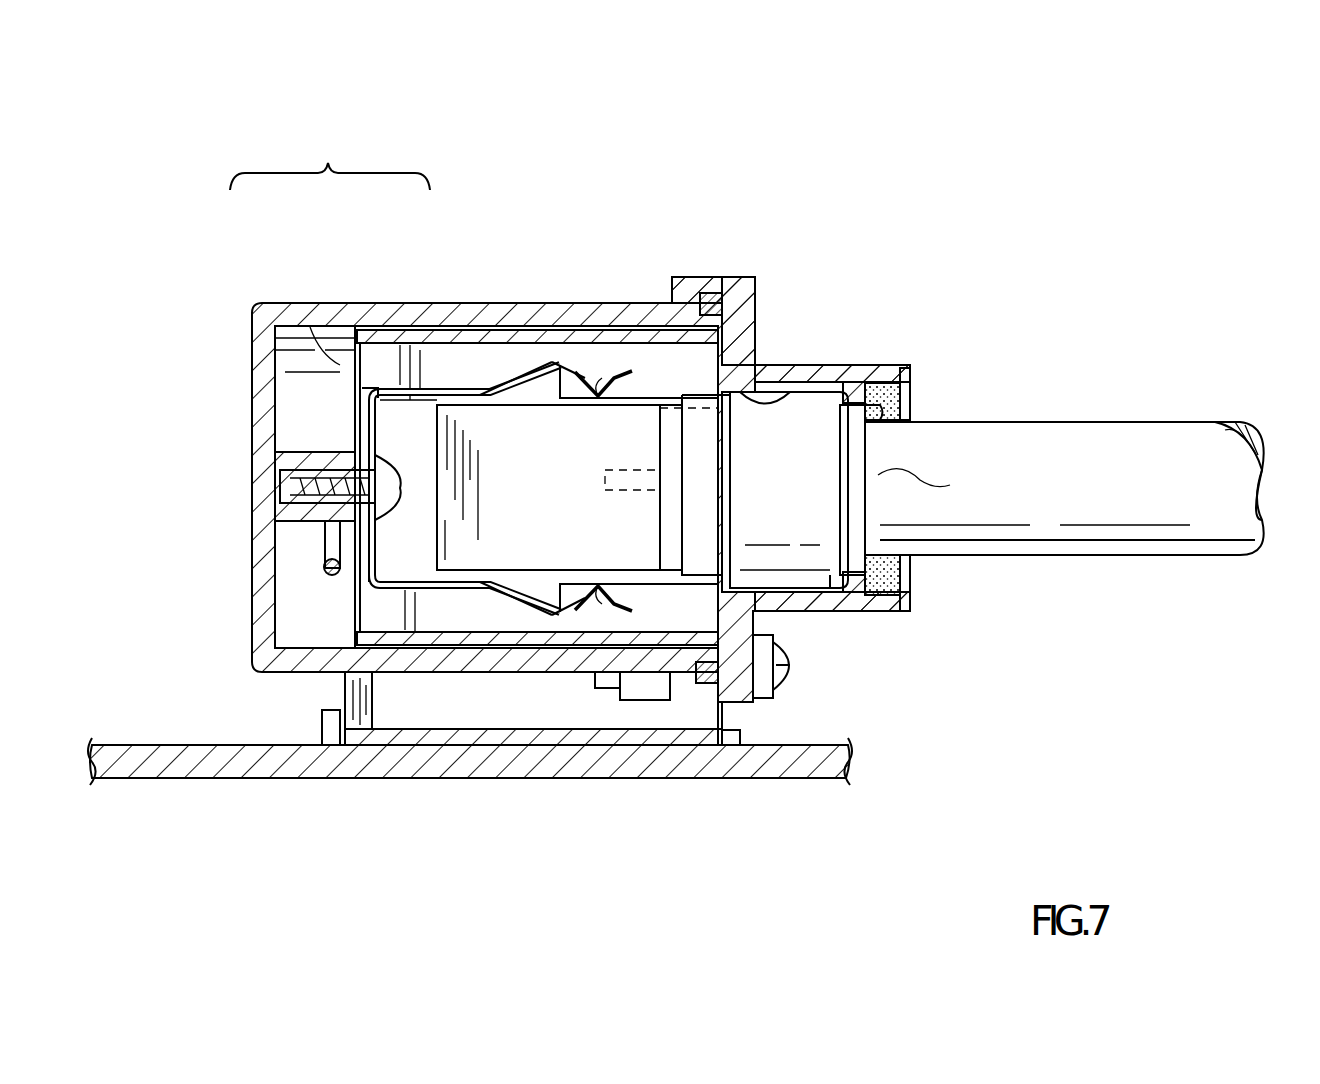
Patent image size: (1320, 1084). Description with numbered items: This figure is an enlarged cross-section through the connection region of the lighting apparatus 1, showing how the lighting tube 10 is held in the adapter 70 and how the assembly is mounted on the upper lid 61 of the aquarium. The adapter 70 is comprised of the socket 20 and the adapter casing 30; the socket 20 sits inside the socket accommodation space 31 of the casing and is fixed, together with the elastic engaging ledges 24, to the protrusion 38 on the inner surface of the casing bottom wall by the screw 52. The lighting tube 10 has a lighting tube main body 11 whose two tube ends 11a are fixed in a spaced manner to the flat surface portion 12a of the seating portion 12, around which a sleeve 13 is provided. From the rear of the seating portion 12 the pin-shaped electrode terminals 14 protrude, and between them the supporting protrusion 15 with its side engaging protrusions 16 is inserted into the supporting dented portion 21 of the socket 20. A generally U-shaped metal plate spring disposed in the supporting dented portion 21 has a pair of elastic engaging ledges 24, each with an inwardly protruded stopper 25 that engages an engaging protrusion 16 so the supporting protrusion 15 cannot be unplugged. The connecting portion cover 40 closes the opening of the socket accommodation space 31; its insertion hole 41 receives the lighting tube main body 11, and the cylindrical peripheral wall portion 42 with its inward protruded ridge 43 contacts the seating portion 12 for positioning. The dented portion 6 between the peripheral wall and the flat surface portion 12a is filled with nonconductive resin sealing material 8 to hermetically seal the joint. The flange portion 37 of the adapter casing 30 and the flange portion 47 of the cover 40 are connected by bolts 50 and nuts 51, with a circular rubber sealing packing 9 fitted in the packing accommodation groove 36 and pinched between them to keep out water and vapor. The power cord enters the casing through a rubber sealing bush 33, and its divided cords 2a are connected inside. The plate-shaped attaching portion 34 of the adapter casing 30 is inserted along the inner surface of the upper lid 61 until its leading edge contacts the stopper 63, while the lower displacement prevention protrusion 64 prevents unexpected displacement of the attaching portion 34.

The lighting apparatus 1 is at (1006, 238).
The divided cord 2a is at (330, 572).
The dented portion 6 is at (908, 400).
The sealing material 8 is at (915, 418).
The sealing packing 9 is at (716, 298).
The lighting tube 10 is at (1140, 420).
The lighting tube main body 11 is at (1112, 545).
The tube end 11a is at (950, 485).
The seating portion 12 is at (707, 503).
The flat surface portion 12a is at (855, 432).
The sleeve 13 is at (818, 560).
The electrode terminal 14 is at (615, 470).
The supporting protrusion 15 is at (445, 492).
The engaging protrusion 16 is at (568, 385).
The socket 20 is at (420, 330).
The supporting dented portion 21 is at (430, 392).
The elastic engaging ledge 24 is at (520, 382).
The stopper 25 is at (605, 355).
The adapter casing 30 is at (298, 300).
The socket accommodation space 31 is at (312, 368).
The rubber sealing bush 33 is at (310, 435).
The attaching portion 34 is at (520, 748).
The packing accommodation groove 36 is at (690, 300).
The flange portion 37 is at (710, 292).
The protrusion 38 is at (322, 538).
The connecting portion cover 40 is at (762, 343).
The insertion hole 41 is at (798, 383).
The peripheral wall portion 42 is at (885, 393).
The protruded ridge 43 is at (847, 385).
The flange portion 47 is at (738, 290).
The bolt 50 is at (797, 665).
The nut 51 is at (605, 690).
The screw 52 is at (372, 500).
The upper lid 61 is at (400, 765).
The stopper 63 is at (330, 730).
The displacement prevention protrusion 64 is at (745, 735).
The adapter 70 is at (330, 154).